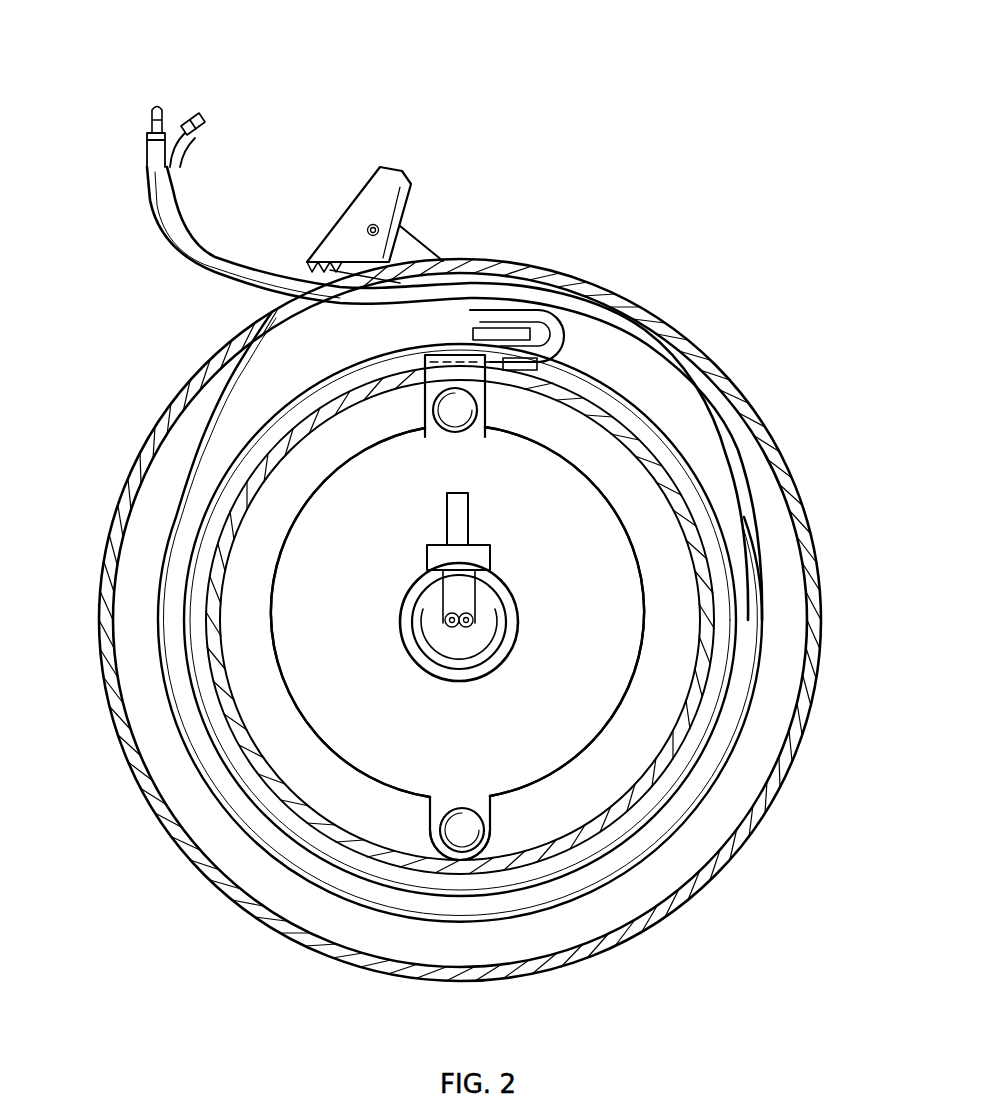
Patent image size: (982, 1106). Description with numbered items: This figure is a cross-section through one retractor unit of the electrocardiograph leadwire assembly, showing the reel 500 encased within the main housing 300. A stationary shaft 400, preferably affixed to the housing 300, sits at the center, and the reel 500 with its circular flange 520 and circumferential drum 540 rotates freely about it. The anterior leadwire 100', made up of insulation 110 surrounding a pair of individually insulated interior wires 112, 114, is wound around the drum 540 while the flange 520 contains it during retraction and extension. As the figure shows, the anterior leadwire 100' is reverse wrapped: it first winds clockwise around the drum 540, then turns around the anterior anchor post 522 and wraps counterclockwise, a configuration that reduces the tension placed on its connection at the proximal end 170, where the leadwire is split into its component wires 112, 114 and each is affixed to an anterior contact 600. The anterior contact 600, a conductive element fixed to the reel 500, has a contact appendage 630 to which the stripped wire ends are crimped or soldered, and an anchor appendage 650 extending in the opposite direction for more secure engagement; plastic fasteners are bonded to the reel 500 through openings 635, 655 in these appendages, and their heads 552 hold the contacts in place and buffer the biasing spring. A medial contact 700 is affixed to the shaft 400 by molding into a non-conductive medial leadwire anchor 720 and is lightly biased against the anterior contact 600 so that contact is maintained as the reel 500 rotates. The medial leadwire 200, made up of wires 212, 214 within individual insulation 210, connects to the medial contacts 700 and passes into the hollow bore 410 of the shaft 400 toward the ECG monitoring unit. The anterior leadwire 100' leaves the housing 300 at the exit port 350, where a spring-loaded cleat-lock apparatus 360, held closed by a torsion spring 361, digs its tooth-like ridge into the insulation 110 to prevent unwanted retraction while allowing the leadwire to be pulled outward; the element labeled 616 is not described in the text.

The anterior leadwire 100' is at (456, 393).
The insulation 110 is at (147, 150).
The interior wire 112 is at (150, 114).
The interior wire 114 is at (206, 118).
The proximal end 170 is at (352, 340).
The medial leadwire 200 is at (445, 600).
The individual insulation 210 is at (448, 615).
The wire 212 is at (452, 632).
The wire 214 is at (468, 632).
The main housing 300 is at (762, 405).
The exit port 350 is at (300, 302).
The cleat-lock apparatus 360 is at (395, 165).
The torsion spring 361 is at (411, 185).
The stationary shaft 400 is at (515, 590).
The hollow bore 410 is at (495, 622).
The reel 500 is at (752, 490).
The circular flange 520 is at (775, 540).
The anterior anchor post 522 is at (562, 335).
The drum 540 is at (437, 355).
The fastener head 552 is at (448, 410).
The anterior contact 600 is at (562, 500).
The reel rim 616 is at (545, 760).
The contact appendage 630 is at (492, 328).
The opening 635 is at (490, 405).
The anchor appendage 650 is at (492, 835).
The opening 655 is at (436, 836).
The medial contact 700 is at (452, 520).
The medial leadwire anchor 720 is at (430, 558).